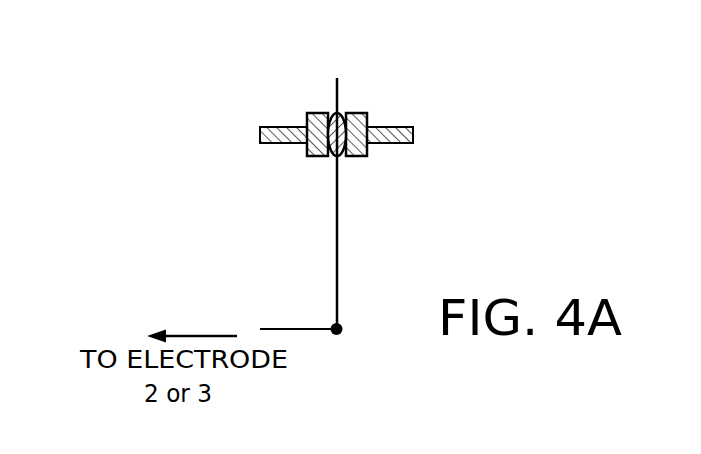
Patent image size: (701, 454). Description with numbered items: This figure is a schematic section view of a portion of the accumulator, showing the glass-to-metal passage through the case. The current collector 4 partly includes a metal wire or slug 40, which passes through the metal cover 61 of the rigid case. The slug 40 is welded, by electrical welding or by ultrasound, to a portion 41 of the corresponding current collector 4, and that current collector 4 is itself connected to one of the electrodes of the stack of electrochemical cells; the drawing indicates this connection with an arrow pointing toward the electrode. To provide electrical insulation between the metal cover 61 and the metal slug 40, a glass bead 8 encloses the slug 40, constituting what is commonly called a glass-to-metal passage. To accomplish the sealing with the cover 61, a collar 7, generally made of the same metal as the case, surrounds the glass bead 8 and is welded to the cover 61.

The current collector 4 is at (337, 255).
The collar 7 is at (366, 113).
The glass bead 8 is at (329, 113).
The metal wire or slug 40 is at (340, 87).
The portion of current collector 41 is at (292, 328).
The cover 61 is at (407, 127).